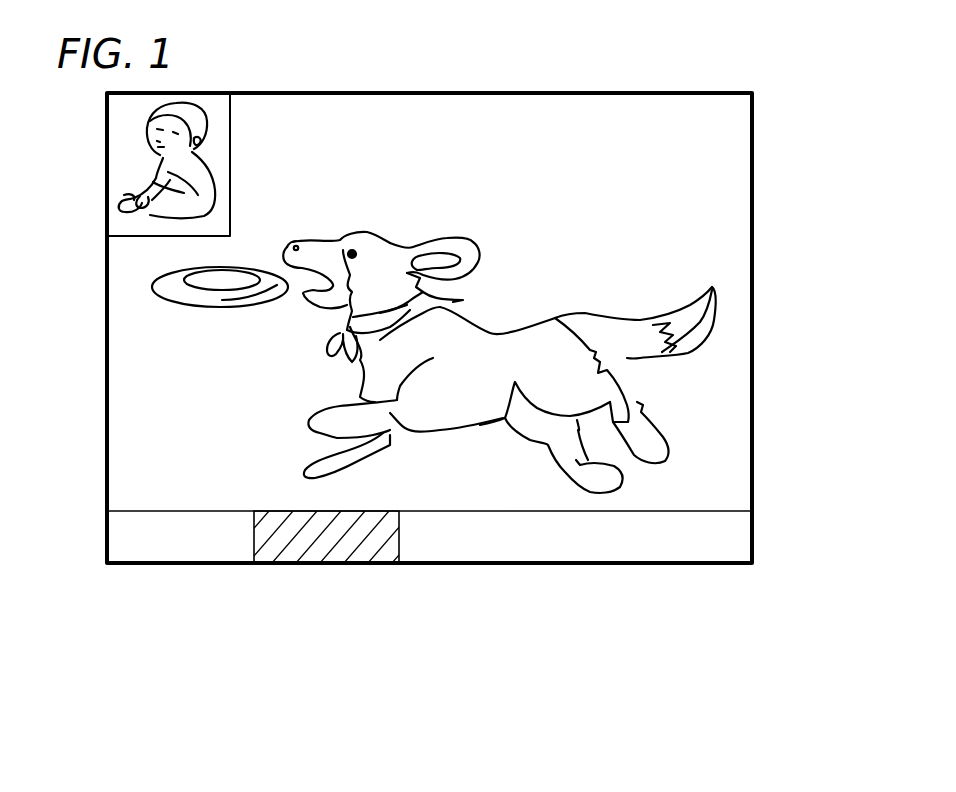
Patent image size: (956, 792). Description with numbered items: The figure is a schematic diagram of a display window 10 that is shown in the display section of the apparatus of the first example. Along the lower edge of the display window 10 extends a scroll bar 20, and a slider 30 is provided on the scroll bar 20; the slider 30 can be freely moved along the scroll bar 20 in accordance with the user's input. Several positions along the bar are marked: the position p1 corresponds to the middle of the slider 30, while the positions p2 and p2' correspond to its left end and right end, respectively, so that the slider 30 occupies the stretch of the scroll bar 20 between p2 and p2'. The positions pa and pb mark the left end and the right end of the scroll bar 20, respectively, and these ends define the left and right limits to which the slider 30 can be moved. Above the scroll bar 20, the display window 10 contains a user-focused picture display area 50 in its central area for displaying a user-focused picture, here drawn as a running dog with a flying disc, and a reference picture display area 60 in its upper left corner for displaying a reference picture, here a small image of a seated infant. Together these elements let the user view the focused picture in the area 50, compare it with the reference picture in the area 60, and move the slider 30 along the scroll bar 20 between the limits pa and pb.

The display window 10 is at (549, 76).
The scroll bar 20 is at (738, 540).
The slider 30 is at (315, 557).
The user-focused picture display area 50 is at (737, 308).
The reference picture display area 60 is at (128, 152).
The middle position of slider p1 is at (362, 475).
The left end position of slider p2 is at (216, 607).
The right end position of slider p2' is at (414, 601).
The left end position of scroll bar pa is at (112, 572).
The right end position of scroll bar pb is at (752, 570).